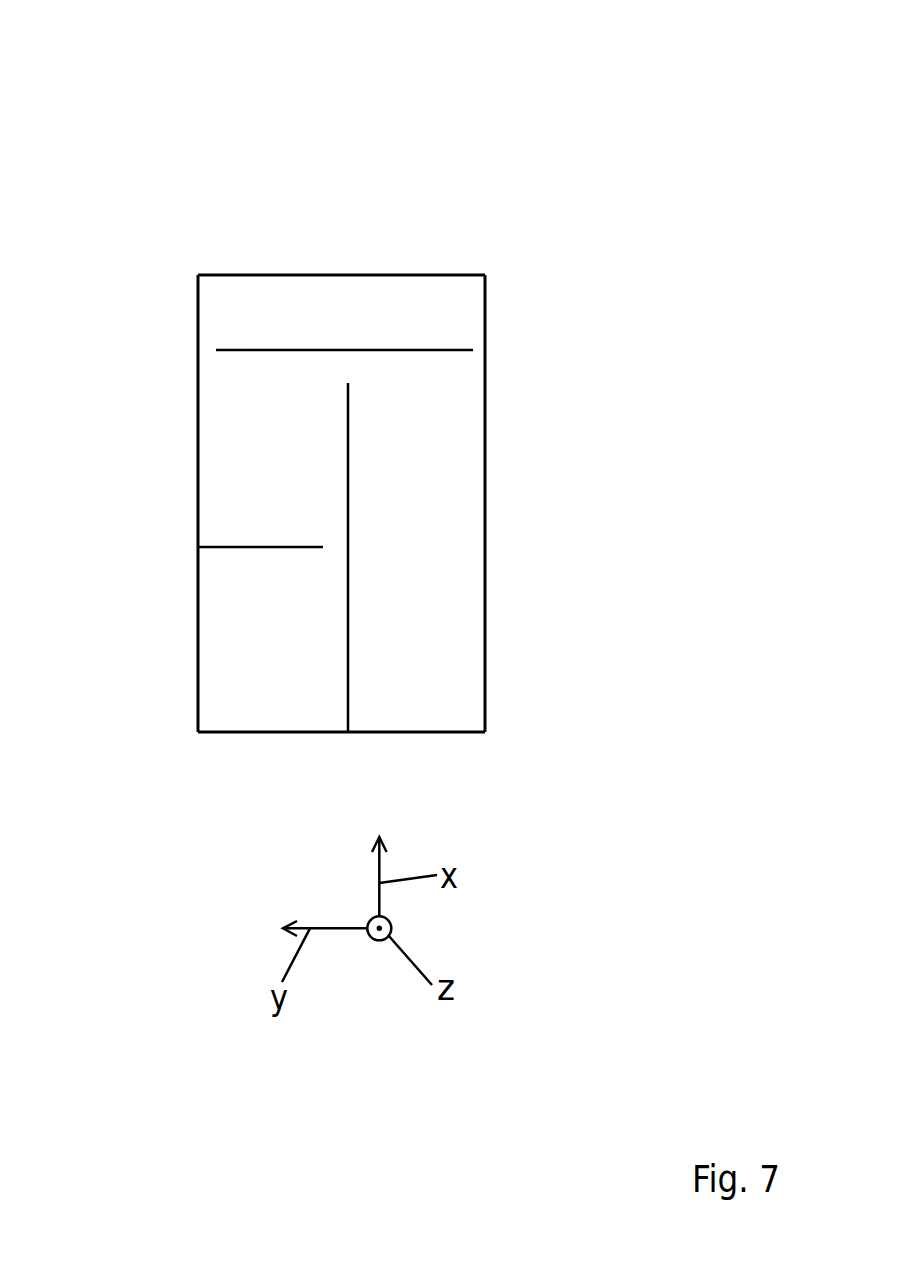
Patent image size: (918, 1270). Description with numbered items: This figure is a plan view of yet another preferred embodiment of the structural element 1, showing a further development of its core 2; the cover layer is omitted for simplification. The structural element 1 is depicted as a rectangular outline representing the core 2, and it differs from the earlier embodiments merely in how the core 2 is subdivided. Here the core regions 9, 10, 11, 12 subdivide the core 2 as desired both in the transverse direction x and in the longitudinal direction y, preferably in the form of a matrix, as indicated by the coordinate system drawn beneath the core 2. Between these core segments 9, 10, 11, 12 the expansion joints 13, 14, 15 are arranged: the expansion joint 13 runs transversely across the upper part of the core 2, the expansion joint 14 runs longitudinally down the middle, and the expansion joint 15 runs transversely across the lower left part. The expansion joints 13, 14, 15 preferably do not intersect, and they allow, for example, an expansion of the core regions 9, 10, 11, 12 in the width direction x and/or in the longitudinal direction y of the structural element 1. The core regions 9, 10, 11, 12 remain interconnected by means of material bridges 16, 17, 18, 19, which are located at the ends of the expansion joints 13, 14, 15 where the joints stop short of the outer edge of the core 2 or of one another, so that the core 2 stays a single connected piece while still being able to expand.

The structural element 1 is at (116, 82).
The core 2 is at (346, 266).
The core region 9 is at (457, 327).
The core region 10 is at (453, 578).
The core region 11 is at (252, 703).
The core region 12 is at (263, 420).
The expansion joint 13 is at (277, 350).
The expansion joint 14 is at (348, 672).
The expansion joint 15 is at (232, 547).
The material bridge 16 is at (205, 348).
The material bridge 17 is at (477, 352).
The material bridge 18 is at (333, 544).
The material bridge 19 is at (348, 370).